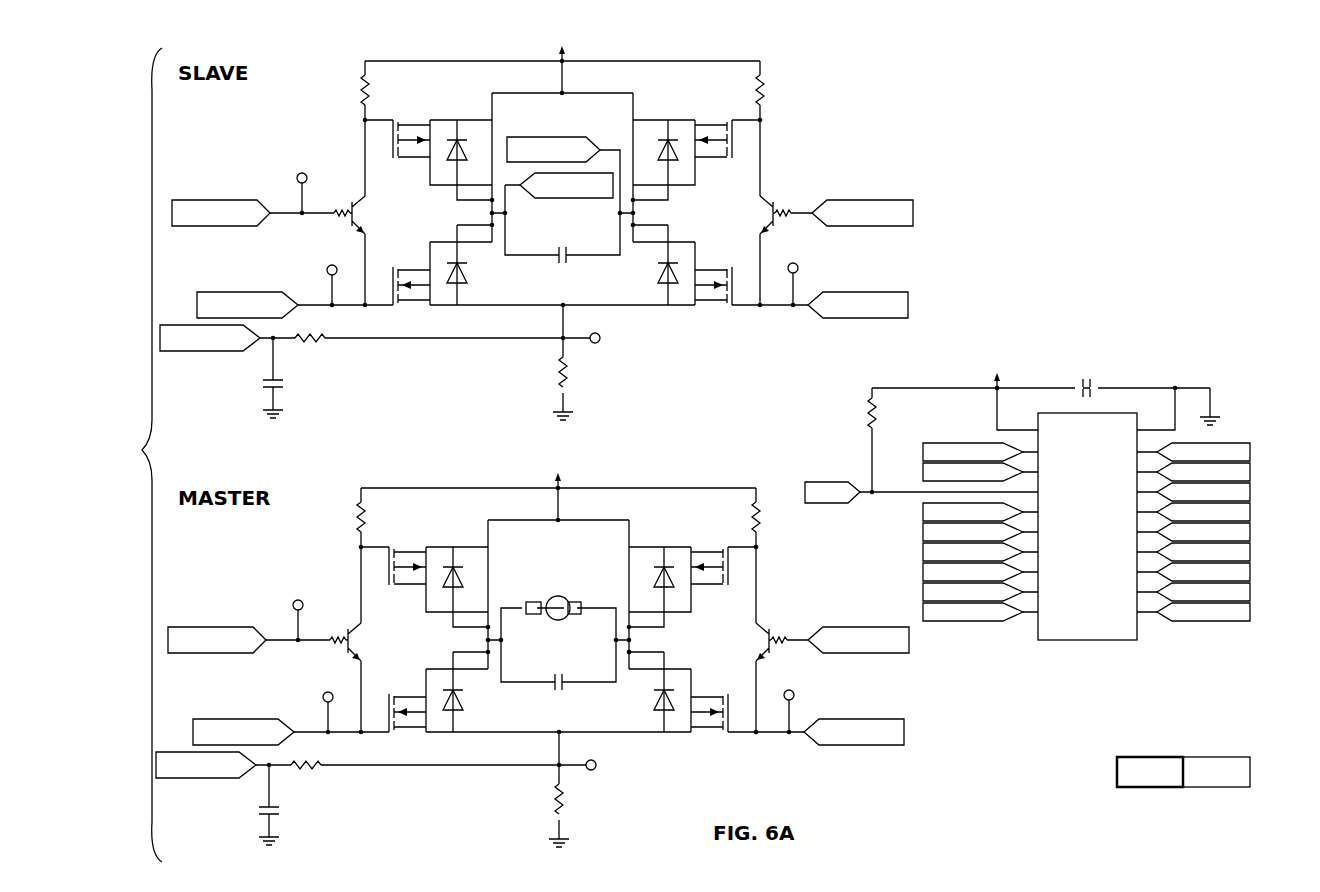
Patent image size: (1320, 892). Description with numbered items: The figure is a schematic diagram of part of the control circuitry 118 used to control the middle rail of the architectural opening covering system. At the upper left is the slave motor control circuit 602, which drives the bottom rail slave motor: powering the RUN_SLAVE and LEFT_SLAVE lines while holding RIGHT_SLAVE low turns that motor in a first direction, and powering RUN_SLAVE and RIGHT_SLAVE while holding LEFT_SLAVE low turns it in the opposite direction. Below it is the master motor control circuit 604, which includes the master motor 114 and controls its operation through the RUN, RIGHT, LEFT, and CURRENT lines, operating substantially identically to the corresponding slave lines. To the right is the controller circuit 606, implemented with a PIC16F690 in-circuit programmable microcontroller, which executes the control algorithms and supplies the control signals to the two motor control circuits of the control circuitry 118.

The slave motor control circuit 602 is at (799, 155).
The master motor control circuit 604 is at (705, 456).
The controller circuit 606 is at (1184, 349).
The master motor 114 is at (567, 600).
The control circuitry 118 is at (1250, 790).